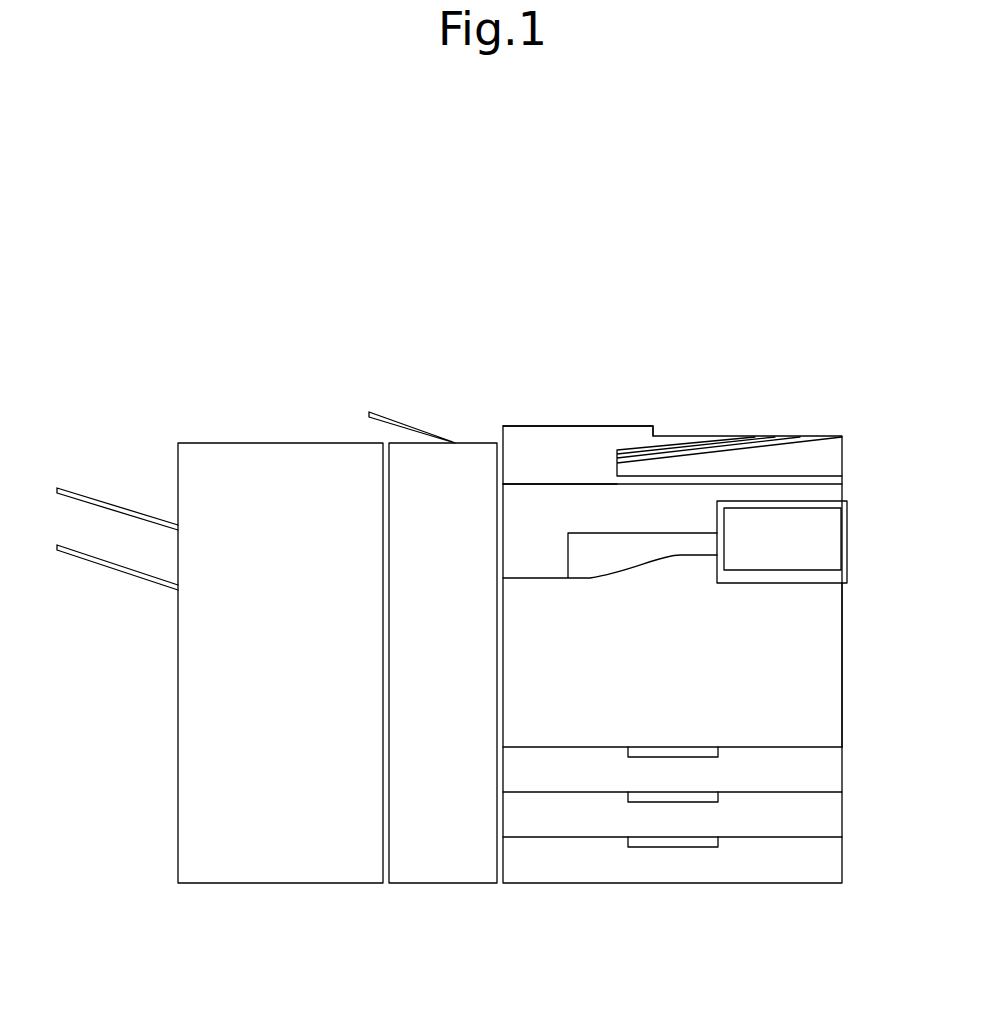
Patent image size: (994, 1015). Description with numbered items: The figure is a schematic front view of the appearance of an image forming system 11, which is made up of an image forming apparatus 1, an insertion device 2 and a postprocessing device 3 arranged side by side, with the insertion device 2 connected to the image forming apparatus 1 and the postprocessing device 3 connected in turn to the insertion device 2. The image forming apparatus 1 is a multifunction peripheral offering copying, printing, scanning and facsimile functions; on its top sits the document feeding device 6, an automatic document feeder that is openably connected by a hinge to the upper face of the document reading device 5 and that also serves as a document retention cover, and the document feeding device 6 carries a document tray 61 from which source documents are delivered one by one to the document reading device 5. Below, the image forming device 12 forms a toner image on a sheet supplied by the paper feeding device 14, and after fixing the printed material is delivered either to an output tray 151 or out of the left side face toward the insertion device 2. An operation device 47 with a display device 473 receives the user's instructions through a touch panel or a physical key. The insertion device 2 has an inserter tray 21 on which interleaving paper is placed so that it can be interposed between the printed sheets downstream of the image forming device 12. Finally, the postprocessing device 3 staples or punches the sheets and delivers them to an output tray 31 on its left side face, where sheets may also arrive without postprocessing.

The image forming system 11 is at (520, 307).
The image forming apparatus 1 is at (682, 883).
The insertion device 2 is at (450, 883).
The postprocessing device 3 is at (273, 883).
The output tray 31 is at (110, 560).
The inserter tray 21 is at (402, 424).
The document feeding device 6 is at (580, 415).
The document tray 61 is at (775, 447).
The document reading device 5 is at (832, 495).
The operation device 47 is at (860, 570).
The display device 473 is at (827, 535).
The output tray 151 is at (590, 572).
The image forming device 12 is at (833, 640).
The paper feeding device 14 is at (833, 772).